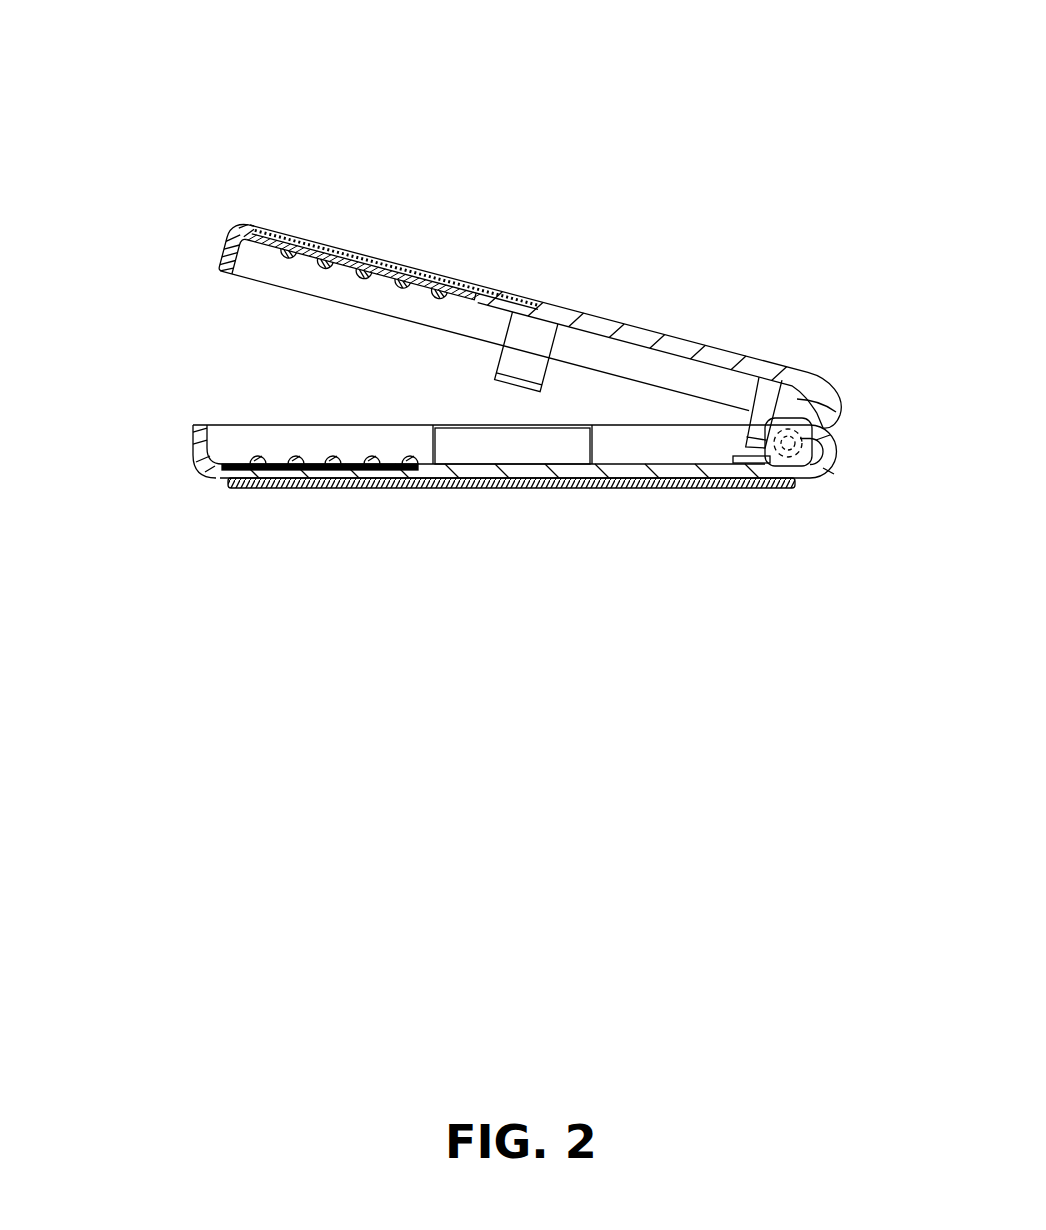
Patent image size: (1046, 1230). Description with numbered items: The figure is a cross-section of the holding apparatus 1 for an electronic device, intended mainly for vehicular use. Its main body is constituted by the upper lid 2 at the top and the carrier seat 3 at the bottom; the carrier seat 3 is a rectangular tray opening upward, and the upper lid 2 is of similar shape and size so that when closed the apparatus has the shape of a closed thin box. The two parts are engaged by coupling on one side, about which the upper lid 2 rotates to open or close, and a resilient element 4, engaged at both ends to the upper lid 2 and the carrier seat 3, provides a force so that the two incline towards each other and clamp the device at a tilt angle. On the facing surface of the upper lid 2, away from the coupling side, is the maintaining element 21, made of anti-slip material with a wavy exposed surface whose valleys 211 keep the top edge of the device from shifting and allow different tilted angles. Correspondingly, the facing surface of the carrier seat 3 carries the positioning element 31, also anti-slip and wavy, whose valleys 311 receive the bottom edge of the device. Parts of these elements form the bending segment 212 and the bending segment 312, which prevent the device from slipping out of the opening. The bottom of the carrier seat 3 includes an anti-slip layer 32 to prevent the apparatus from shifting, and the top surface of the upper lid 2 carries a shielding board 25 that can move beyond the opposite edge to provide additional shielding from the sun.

The holding apparatus 1 is at (557, 243).
The upper lid 2 is at (637, 332).
The maintaining element 21 is at (289, 239).
The valleys 211 is at (322, 262).
The bending segment 212 is at (224, 238).
The shielding board 25 is at (395, 265).
The carrier seat 3 is at (640, 466).
The positioning element 31 is at (277, 468).
The valleys 311 is at (320, 466).
The bending segment 312 is at (193, 452).
The anti-slip layer 32 is at (487, 481).
The resilient element 4 is at (797, 455).